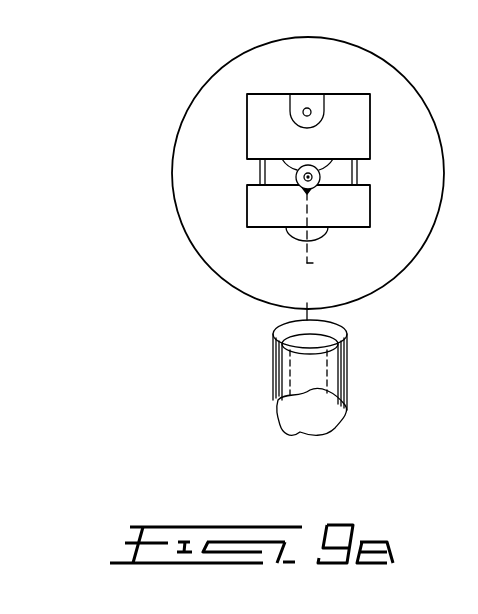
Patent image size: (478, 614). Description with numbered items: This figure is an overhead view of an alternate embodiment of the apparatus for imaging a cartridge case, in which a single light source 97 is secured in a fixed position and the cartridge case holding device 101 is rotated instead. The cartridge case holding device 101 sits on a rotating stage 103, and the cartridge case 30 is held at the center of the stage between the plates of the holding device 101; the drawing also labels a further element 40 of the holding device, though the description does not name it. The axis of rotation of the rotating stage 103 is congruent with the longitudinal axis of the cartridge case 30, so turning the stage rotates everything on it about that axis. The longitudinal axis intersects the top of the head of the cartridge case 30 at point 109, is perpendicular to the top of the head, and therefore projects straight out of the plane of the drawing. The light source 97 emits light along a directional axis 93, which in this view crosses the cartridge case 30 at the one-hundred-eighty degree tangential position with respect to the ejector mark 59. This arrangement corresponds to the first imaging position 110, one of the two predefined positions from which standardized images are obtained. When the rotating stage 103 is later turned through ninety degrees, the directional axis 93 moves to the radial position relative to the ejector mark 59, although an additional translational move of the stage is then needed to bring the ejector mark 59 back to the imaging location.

The cartridge case 30 is at (296, 177).
The upper clamp block 40 is at (246, 110).
The ejector mark 59 is at (320, 171).
The directional axis 93 is at (309, 263).
The light source 97 is at (275, 385).
The cartridge case holding device 101 is at (262, 172).
The rotating stage 103 is at (186, 112).
The point 109 is at (305, 186).
The imaging position 110 is at (262, 293).